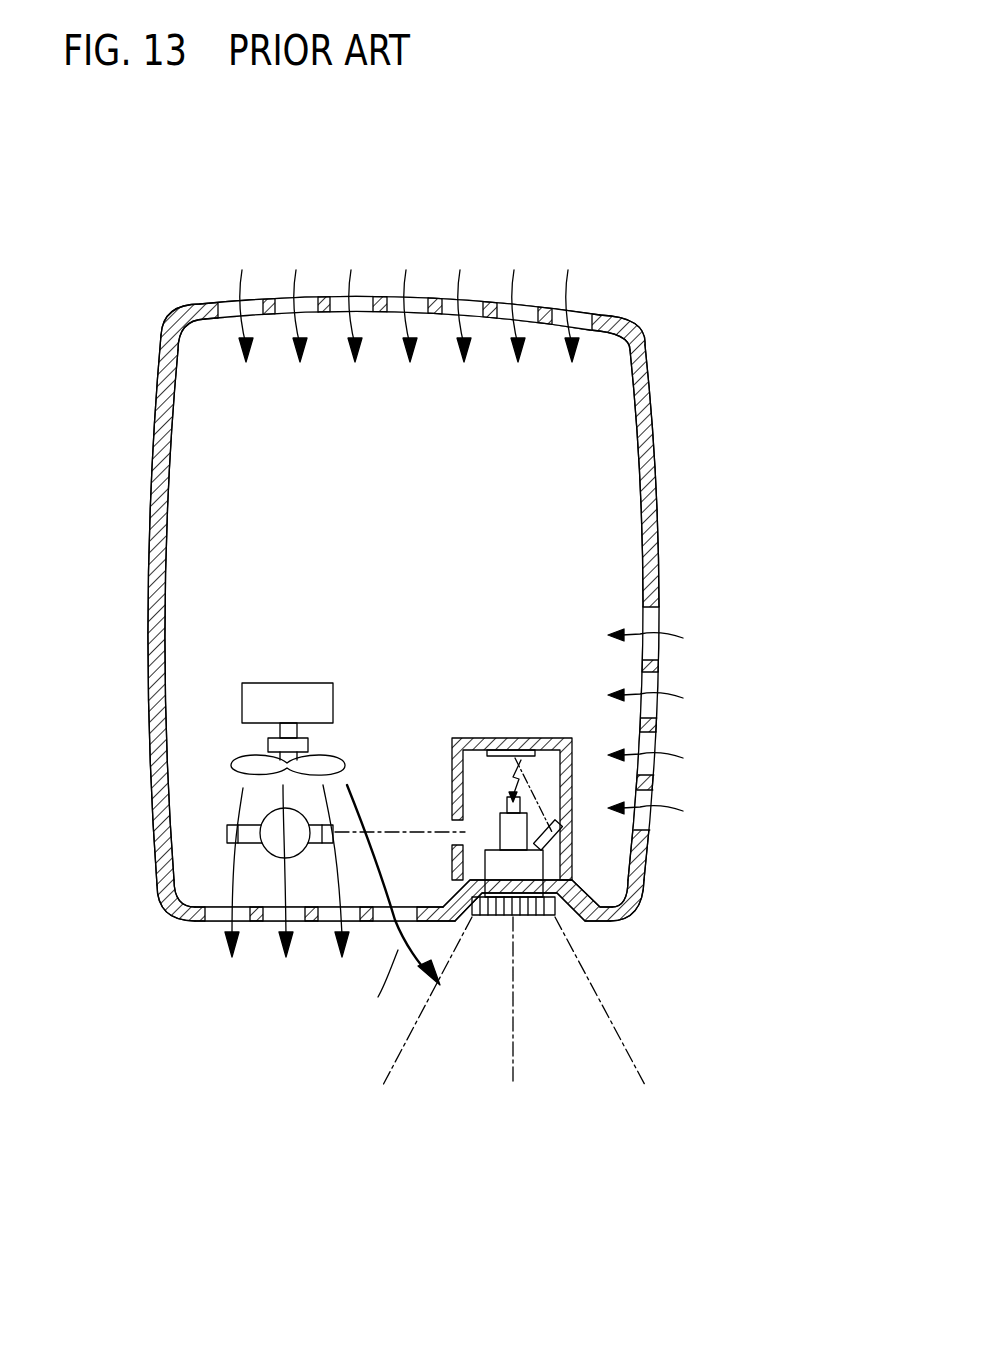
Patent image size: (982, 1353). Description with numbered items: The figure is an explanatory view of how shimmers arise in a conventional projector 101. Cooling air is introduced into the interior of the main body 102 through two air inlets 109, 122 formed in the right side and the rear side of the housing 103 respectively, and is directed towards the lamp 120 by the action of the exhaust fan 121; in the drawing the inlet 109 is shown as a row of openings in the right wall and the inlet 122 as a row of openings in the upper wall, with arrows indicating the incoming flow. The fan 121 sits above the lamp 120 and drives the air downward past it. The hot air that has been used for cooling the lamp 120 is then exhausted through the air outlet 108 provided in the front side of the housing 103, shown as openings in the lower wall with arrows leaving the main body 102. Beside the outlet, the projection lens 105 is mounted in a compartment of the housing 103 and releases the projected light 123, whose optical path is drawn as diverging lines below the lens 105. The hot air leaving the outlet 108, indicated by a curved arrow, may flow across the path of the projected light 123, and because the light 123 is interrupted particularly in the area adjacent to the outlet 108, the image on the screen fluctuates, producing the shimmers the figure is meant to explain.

The detection apparatus 101 is at (428, 193).
The main body 102 is at (145, 457).
The housing 103 is at (158, 868).
The projection lens 105 is at (570, 920).
The air outlet 108 is at (312, 940).
The air inlet 109 is at (677, 725).
The lamp 120 is at (228, 832).
The exhaust fan 121 is at (238, 755).
The air inlet 122 is at (481, 286).
The projected light 123 is at (418, 1022).